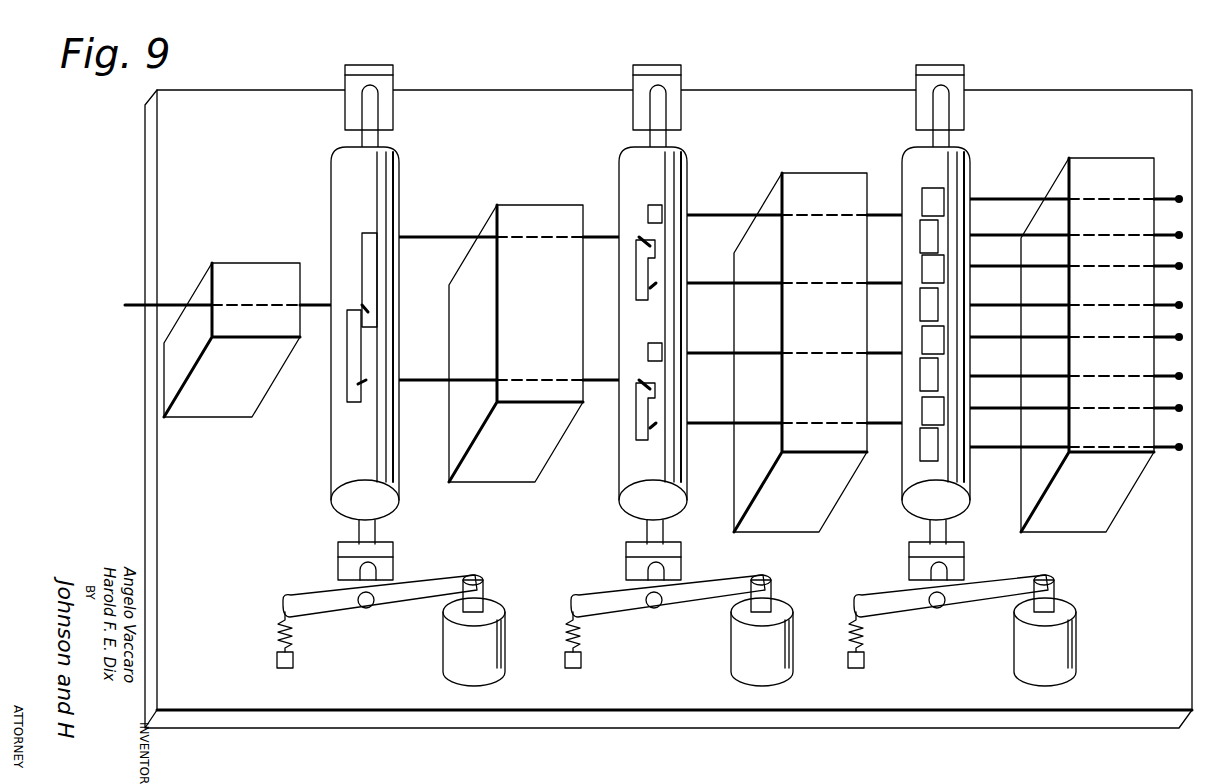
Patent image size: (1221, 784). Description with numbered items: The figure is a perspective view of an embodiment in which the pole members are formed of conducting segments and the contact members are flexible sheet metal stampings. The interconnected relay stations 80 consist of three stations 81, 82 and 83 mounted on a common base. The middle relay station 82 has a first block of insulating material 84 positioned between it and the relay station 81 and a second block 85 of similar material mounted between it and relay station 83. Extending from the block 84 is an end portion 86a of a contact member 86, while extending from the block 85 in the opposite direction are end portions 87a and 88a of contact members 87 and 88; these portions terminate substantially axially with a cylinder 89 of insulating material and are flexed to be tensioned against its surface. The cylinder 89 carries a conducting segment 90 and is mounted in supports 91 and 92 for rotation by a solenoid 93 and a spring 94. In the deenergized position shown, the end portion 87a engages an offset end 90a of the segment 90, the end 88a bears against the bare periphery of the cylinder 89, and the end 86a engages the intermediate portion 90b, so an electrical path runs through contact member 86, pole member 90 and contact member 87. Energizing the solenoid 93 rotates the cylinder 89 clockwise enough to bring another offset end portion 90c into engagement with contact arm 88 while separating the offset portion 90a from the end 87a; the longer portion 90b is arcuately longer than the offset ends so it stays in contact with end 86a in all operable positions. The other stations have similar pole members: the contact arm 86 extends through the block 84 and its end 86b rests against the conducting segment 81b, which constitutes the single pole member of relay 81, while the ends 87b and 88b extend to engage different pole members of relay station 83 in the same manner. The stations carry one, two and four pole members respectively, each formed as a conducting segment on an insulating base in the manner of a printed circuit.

The interconnected relay stations 80 is at (971, 742).
The relay station 81 is at (374, 375).
The conducting segment 81b is at (358, 228).
The middle relay station 82 is at (674, 370).
The relay station 83 is at (900, 518).
The first block of insulating material 84 is at (548, 204).
The second block 85 is at (829, 176).
The contact member 86 is at (512, 232).
The end portion 86a is at (598, 236).
The end 86b is at (441, 235).
The contact member 87 is at (810, 212).
The end portion 87a is at (741, 214).
The end 87b is at (890, 213).
The contact member 88 is at (805, 281).
The end portion 88a is at (712, 288).
The end 88b is at (880, 286).
The cylinder 89 is at (632, 477).
The conducting segment 90 is at (664, 297).
The offset end 90a is at (661, 212).
The intermediate portion 90b is at (661, 252).
The offset end portion 90c is at (641, 293).
The support 91 is at (669, 562).
The support 92 is at (680, 72).
The solenoid 93 is at (738, 654).
The spring 94 is at (584, 635).